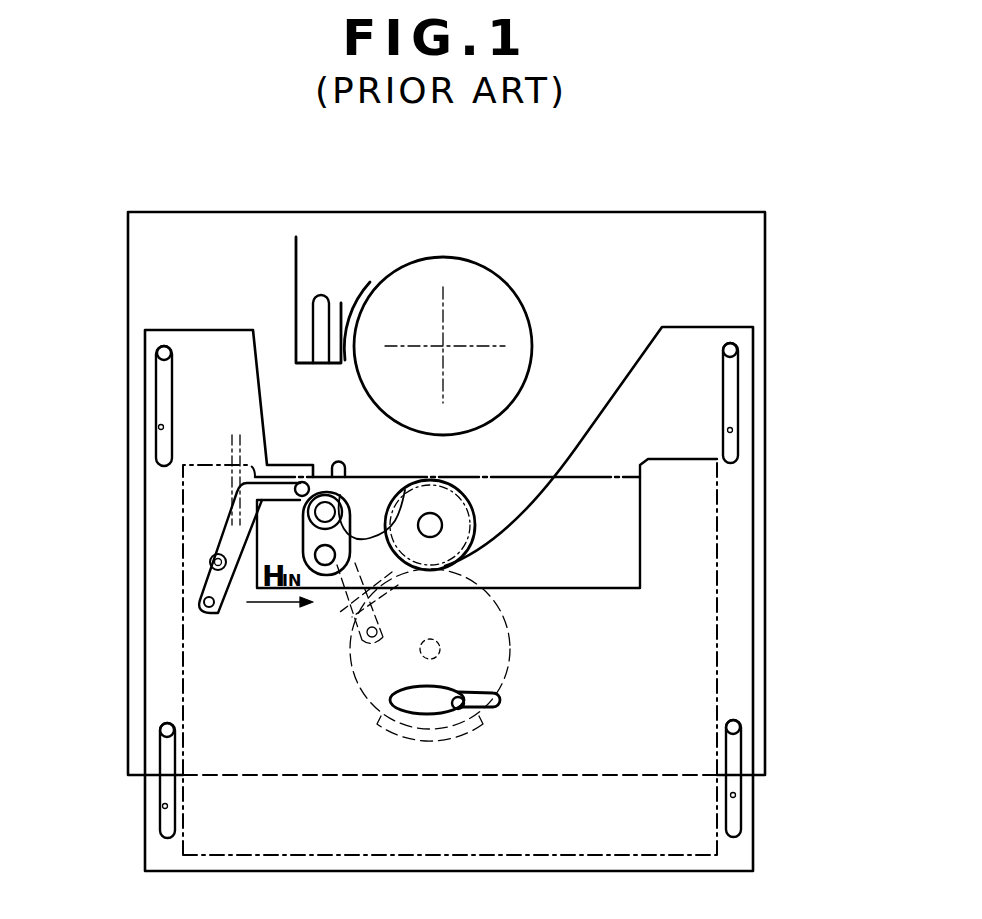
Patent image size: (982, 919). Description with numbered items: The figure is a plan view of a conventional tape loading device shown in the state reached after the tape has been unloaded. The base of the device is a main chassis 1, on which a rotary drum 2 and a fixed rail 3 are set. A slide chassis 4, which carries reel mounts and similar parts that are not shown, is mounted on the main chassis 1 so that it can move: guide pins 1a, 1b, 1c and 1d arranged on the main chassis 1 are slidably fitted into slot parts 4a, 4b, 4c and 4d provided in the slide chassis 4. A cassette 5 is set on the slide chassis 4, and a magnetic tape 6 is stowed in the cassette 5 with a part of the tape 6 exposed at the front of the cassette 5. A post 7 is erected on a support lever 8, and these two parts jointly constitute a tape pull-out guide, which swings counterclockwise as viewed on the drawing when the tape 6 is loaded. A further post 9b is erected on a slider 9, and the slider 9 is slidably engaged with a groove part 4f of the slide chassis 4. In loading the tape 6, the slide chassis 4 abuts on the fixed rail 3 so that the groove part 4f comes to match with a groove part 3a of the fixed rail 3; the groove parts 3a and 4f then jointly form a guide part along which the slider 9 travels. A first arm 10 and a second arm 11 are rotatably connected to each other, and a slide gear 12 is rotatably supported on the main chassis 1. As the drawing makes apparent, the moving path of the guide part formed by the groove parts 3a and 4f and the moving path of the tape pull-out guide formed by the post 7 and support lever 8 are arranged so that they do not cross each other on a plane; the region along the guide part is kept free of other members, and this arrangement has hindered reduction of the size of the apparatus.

The main chassis 1 is at (765, 268).
The guide pin 1a is at (157, 353).
The guide pin 1b is at (160, 730).
The guide pin 1c is at (740, 727).
The guide pin 1d is at (738, 350).
The rotary drum 2 is at (462, 257).
The fixed rail 3 is at (290, 263).
The groove part 3a is at (320, 298).
The slide chassis 4 is at (753, 840).
The slot part 4a is at (160, 428).
The slot part 4b is at (163, 808).
The slot part 4c is at (735, 795).
The slot part 4d is at (735, 430).
The groove part 4f is at (335, 472).
The cassette 5 is at (717, 607).
The magnetic tape 6 is at (540, 473).
The post 7 is at (300, 485).
The support lever 8 is at (210, 532).
The slider 9 is at (387, 492).
The post 9b is at (350, 495).
The first arm 10 is at (340, 624).
The second arm 11 is at (392, 610).
The slide gear 12 is at (498, 685).